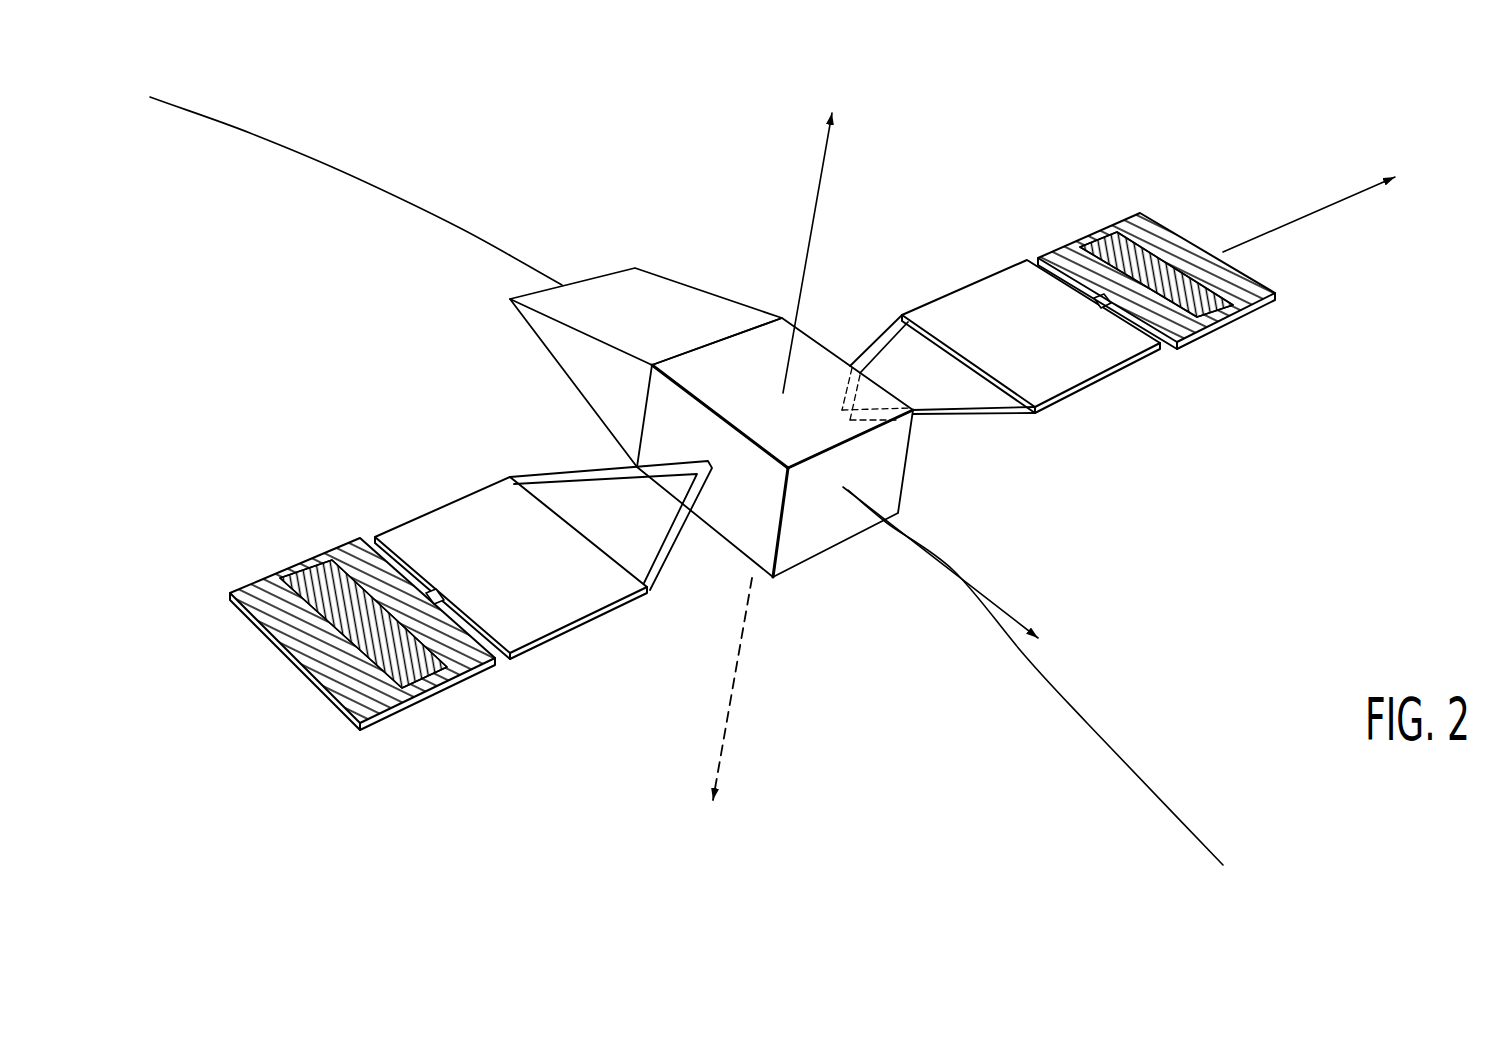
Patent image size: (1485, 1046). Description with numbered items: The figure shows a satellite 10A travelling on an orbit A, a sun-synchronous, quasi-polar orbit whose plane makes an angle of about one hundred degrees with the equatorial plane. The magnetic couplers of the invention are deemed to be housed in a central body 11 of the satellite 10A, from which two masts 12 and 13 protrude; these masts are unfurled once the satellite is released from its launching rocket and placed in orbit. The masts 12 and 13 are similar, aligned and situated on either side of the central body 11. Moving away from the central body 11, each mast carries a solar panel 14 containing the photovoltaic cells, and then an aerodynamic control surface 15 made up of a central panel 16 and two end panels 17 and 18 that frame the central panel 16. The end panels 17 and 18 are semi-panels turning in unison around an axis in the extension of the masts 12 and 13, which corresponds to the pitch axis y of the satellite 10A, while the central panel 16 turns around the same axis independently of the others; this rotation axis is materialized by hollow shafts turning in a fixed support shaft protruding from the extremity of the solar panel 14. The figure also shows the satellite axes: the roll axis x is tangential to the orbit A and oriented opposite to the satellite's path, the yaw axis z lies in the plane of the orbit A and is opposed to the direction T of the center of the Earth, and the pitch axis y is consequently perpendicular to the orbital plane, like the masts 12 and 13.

The satellite 10A is at (810, 433).
The central body 11 is at (747, 302).
The mast 12 is at (357, 520).
The mast 13 is at (1116, 321).
The solar panel 14 is at (1068, 368).
The aerodynamic control surface 15 is at (1214, 292).
The central panel 16 is at (1192, 293).
The end panel 17 is at (1192, 343).
The end panel 18 is at (1242, 285).
The orbit A is at (350, 175).
The direction of the center of the Earth T is at (729, 711).
The roll axis x is at (955, 568).
The pitch axis y is at (1321, 198).
The yaw axis z is at (807, 238).